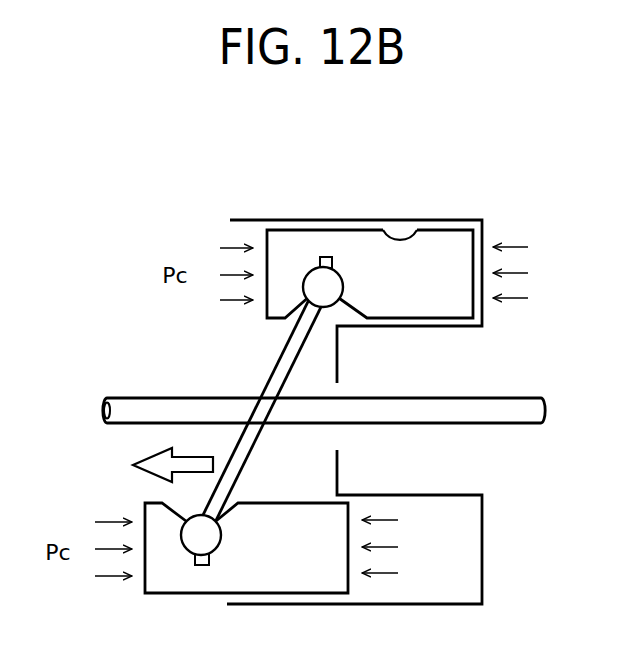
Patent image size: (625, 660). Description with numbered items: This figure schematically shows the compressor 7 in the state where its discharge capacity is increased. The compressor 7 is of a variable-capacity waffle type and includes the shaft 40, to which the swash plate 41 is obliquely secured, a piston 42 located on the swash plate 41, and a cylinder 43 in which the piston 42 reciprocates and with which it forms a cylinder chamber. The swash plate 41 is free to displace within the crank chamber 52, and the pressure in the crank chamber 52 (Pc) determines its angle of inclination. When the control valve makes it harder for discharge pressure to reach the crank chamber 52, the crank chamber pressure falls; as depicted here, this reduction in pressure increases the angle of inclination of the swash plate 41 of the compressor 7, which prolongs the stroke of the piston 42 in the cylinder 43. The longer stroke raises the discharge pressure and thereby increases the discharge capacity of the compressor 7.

The compressor 7 is at (130, 267).
The shaft 40 is at (140, 410).
The swash plate 41 is at (287, 357).
The piston 42 is at (437, 298).
The cylinder 43 is at (417, 228).
The crank chamber 52 is at (458, 547).